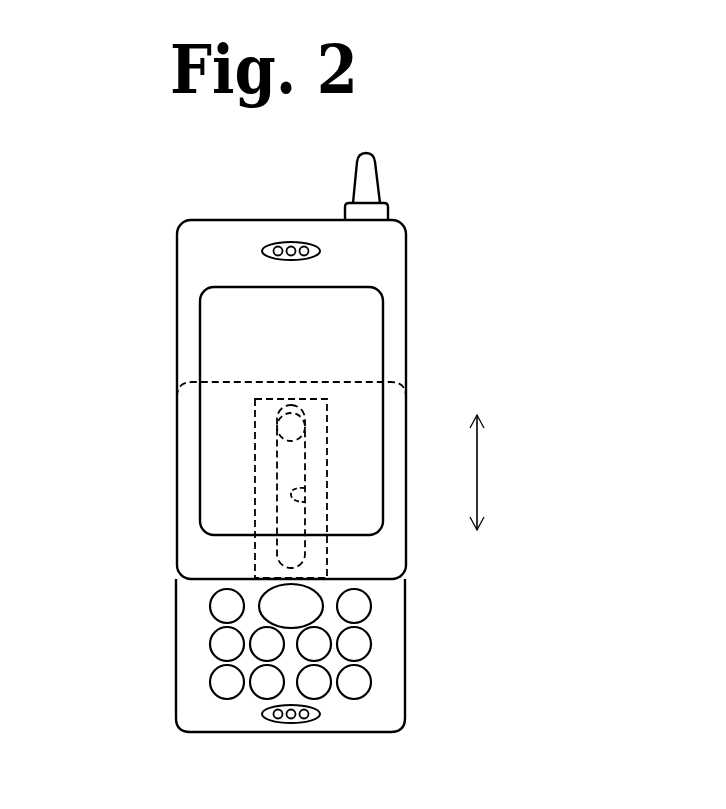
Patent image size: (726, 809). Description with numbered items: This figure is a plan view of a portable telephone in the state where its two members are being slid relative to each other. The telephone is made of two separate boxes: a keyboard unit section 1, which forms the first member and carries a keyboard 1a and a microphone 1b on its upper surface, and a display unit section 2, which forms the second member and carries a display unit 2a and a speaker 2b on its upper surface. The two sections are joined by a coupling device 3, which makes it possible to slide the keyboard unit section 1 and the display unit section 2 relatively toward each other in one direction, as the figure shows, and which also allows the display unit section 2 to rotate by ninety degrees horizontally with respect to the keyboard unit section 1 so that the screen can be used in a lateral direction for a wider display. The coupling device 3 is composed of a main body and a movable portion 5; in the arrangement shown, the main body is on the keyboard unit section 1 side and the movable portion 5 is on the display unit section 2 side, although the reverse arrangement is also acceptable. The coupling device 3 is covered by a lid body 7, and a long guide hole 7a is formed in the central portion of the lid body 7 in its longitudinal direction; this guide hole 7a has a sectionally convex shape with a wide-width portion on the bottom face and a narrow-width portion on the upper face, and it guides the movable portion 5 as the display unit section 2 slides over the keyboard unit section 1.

The keyboard unit section 1 is at (177, 537).
The keyboard 1a is at (375, 625).
The microphone 1b is at (275, 720).
The display unit section 2 is at (397, 323).
The display unit 2a is at (222, 352).
The speaker 2b is at (275, 242).
The coupling device 3 is at (257, 482).
The movable portion 5 is at (292, 418).
The lid body 7 is at (252, 425).
The guide hole 7a is at (300, 500).